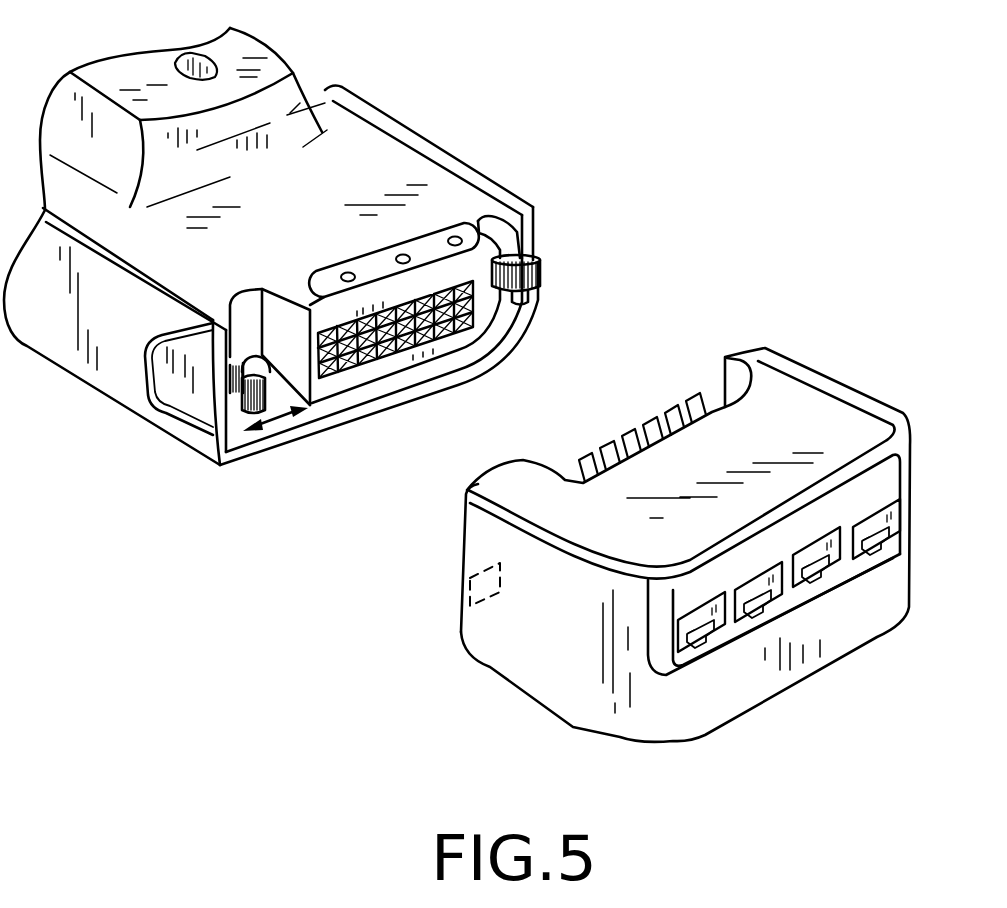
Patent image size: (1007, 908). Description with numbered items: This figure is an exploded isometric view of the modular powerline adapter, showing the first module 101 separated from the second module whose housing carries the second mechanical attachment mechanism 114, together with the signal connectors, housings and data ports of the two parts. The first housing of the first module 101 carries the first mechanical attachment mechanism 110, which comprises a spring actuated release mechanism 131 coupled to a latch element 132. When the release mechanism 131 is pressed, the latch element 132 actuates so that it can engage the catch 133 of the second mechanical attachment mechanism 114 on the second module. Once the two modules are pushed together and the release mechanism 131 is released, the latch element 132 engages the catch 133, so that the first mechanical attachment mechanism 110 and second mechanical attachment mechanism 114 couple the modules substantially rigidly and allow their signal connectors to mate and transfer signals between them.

The first module 101 is at (522, 357).
The first mechanical attachment mechanism 110 is at (232, 430).
The second mechanical attachment mechanism 114 is at (376, 563).
The spring actuated release mechanism 131 is at (185, 405).
The latch element 132 is at (278, 382).
The catch 133 is at (472, 575).